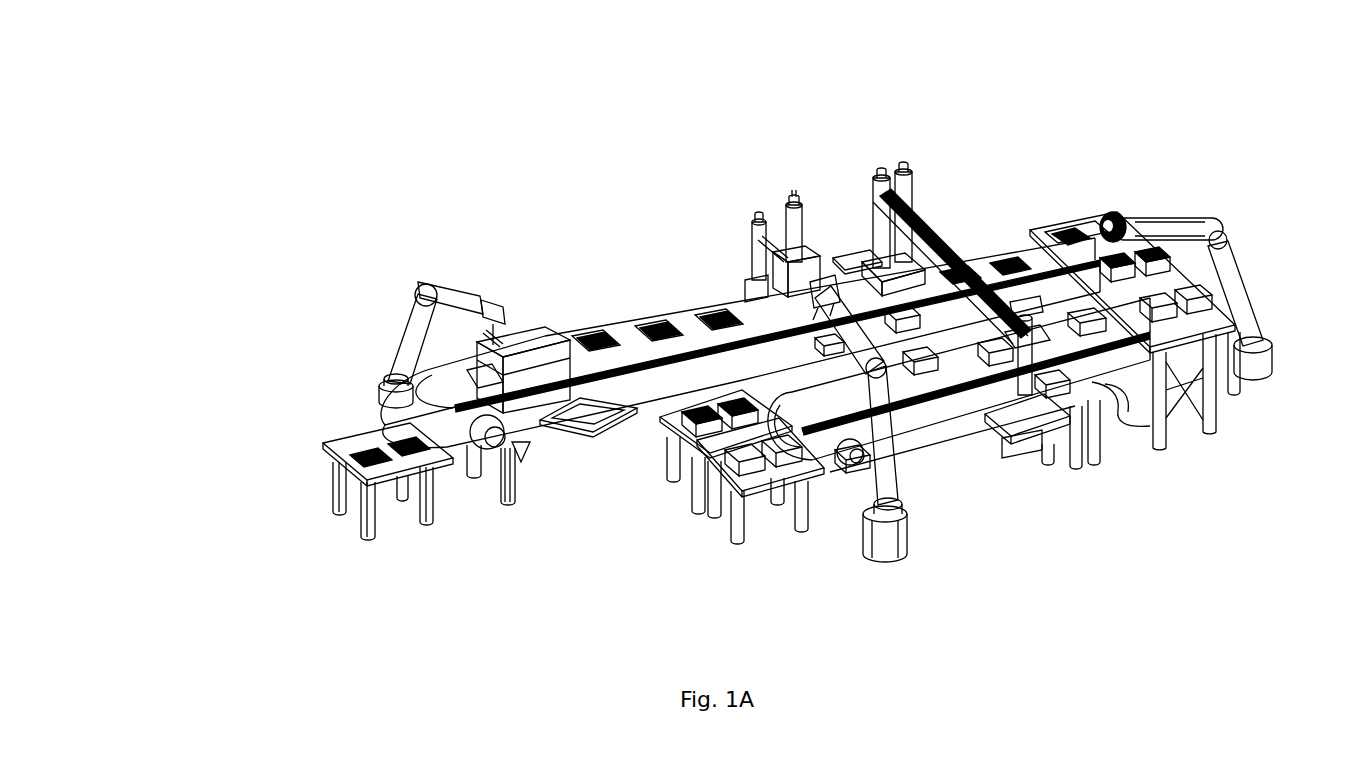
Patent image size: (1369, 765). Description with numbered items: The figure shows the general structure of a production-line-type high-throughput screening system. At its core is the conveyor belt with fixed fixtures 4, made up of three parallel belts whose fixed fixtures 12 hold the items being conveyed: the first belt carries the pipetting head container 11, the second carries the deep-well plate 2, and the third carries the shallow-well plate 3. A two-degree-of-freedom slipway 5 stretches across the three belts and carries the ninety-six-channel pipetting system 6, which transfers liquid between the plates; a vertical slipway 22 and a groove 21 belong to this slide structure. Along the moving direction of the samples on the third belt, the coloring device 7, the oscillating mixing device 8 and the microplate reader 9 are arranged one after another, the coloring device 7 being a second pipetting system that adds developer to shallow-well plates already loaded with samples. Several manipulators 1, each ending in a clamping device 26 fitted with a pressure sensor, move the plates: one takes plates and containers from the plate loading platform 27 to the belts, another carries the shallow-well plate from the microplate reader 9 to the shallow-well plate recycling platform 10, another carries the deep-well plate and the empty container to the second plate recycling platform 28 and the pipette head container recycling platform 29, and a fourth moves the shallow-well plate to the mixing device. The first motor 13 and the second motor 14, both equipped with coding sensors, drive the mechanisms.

The manipulator 1 is at (440, 290).
The 96-deep-well plate 2 is at (1152, 252).
The 96-shallow-well plate 3 is at (1070, 222).
The conveyor belt with fixed fixtures 4 is at (710, 289).
The 2-DOF slipway 5 is at (897, 172).
The 96-channel pipetting system 6 is at (749, 254).
The coloring device 7 is at (752, 224).
The oscillating mixing device 8 is at (641, 330).
The microplate reader 9 is at (533, 345).
The shallow-well plate recycling platform 10 is at (367, 436).
The 96-pipetting head container 11 is at (985, 432).
The fixed fixtures 12 is at (1019, 438).
The first motor 13 is at (392, 482).
The second motor 14 is at (863, 502).
The groove 21 is at (868, 470).
The vertical slipway 22 is at (878, 198).
The clamping device 26 is at (488, 312).
The plate loading platform 27 is at (1218, 384).
The second plate recycling platform 28 is at (678, 470).
The pipette head container recycling platform 29 is at (736, 512).